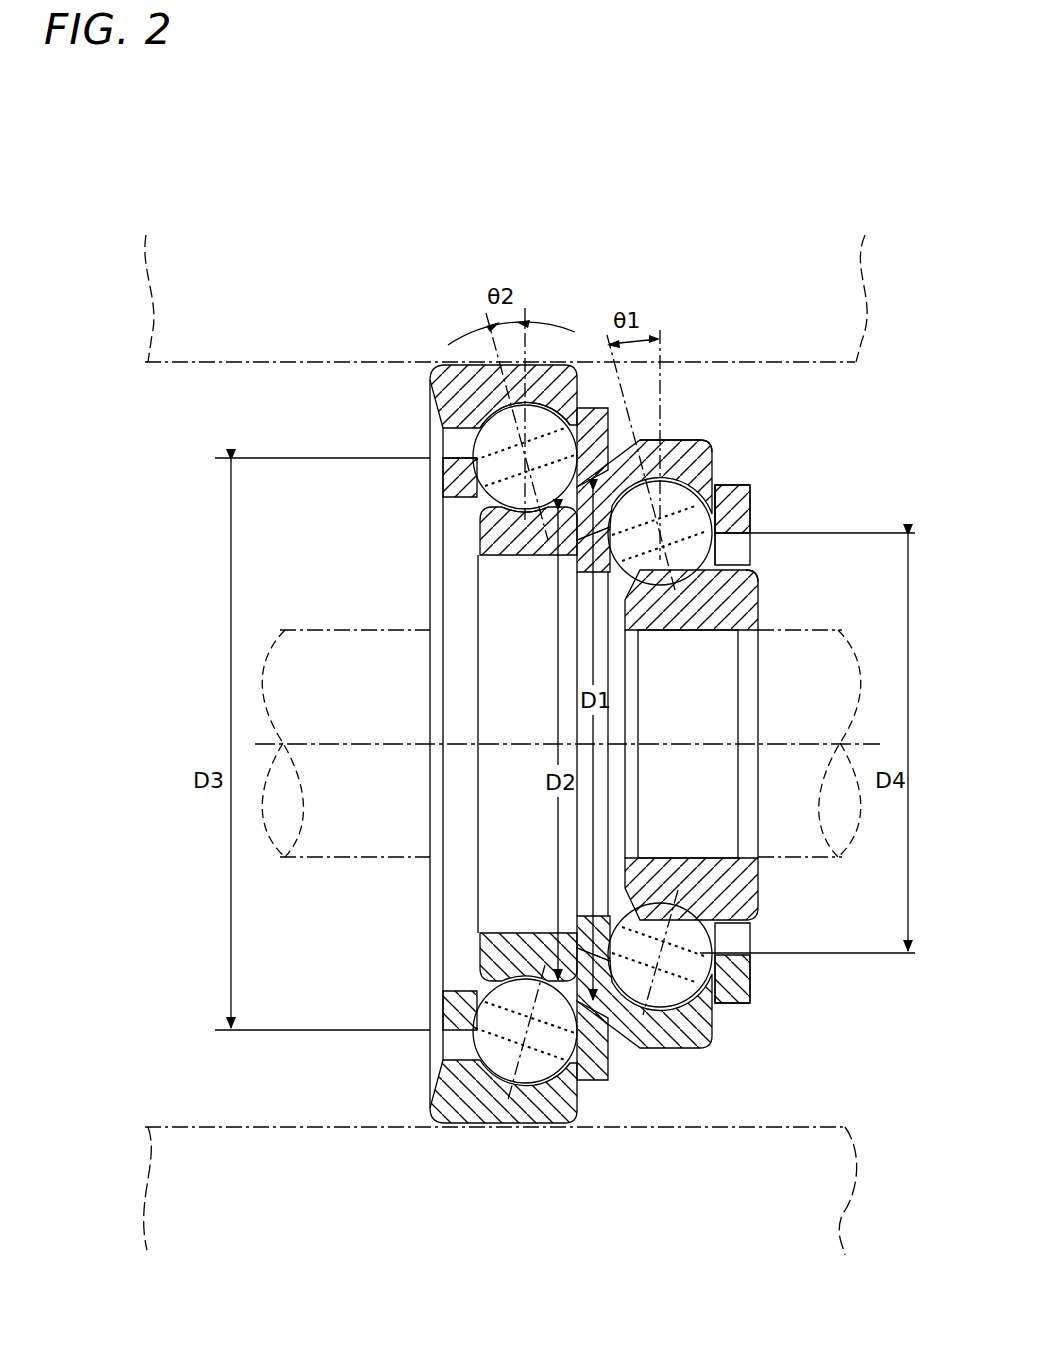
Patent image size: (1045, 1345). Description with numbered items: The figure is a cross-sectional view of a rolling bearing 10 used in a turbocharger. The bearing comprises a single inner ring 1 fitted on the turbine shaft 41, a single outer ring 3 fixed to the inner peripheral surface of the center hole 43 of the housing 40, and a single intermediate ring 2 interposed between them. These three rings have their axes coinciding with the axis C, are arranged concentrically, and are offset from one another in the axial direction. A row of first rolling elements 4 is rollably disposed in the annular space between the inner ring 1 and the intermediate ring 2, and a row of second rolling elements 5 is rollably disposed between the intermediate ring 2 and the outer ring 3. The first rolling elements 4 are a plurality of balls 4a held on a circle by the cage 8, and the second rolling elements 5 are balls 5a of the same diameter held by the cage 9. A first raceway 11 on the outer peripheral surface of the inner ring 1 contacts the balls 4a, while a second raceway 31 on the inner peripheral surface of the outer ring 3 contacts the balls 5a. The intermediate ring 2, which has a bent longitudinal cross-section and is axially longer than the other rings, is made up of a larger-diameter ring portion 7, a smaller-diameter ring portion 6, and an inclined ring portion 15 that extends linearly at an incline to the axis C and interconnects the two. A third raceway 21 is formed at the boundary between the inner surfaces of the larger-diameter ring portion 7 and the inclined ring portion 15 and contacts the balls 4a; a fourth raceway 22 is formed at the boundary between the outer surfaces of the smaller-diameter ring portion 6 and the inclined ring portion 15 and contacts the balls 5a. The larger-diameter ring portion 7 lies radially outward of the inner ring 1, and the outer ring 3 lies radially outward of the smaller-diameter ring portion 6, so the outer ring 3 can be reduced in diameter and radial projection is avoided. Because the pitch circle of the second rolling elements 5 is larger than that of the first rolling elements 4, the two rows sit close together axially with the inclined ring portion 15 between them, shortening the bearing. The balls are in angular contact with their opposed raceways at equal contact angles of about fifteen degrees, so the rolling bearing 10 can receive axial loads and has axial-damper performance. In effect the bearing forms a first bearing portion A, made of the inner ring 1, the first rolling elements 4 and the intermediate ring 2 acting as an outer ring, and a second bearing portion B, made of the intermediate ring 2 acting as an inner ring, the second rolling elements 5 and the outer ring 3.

The inner ring 1 is at (762, 597).
The intermediate ring 2 is at (679, 439).
The outer ring 3 is at (428, 410).
The first rolling elements 4 is at (720, 508).
The balls 4a is at (714, 930).
The second rolling elements 5 is at (472, 440).
The balls 5a is at (455, 1050).
The smaller-diameter ring portion 6 is at (478, 528).
The larger-diameter ring portion 7 is at (734, 486).
The cage 8 is at (752, 987).
The cage 9 is at (615, 1068).
The rolling bearing 10 is at (770, 1040).
The first raceway 11 is at (757, 572).
The inclined ring portion 15 is at (592, 425).
The third raceway 21 is at (700, 458).
The fourth raceway 22 is at (478, 512).
The second raceway 31 is at (483, 426).
The housing 40 is at (247, 1127).
The turbine shaft 41 is at (335, 630).
The center hole 43 is at (302, 927).
The first bearing portion A is at (762, 521).
The second bearing portion B is at (422, 468).
The axis C is at (833, 744).